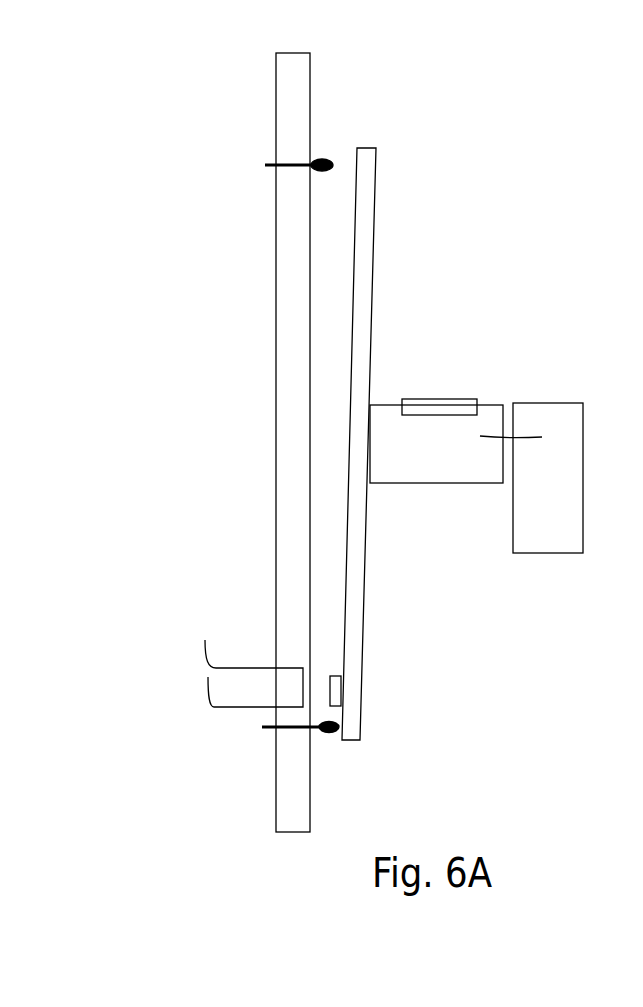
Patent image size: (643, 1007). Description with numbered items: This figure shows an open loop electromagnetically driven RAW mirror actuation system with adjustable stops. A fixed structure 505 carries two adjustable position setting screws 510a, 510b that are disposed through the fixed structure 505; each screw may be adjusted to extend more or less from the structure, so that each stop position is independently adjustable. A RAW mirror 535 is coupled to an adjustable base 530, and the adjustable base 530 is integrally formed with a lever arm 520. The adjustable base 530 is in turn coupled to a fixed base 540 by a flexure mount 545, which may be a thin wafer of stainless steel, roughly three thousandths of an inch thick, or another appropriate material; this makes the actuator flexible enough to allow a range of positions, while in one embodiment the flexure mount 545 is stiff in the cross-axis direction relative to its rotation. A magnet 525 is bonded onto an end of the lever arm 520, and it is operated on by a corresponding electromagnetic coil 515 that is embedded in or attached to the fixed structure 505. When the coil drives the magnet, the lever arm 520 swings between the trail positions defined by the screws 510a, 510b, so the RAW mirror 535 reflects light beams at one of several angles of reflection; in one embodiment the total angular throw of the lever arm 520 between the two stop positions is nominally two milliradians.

The fixed structure 505 is at (308, 69).
The adjustable position setting screw 510a is at (265, 165).
The adjustable position setting screw 510b is at (262, 727).
The electromagnetic coil 515 is at (305, 673).
The lever arm 520 is at (361, 633).
The magnet 525 is at (337, 676).
The adjustable base 530 is at (430, 485).
The RAW mirror 535 is at (431, 399).
The fixed base 540 is at (545, 553).
The flexure mount 545 is at (540, 437).